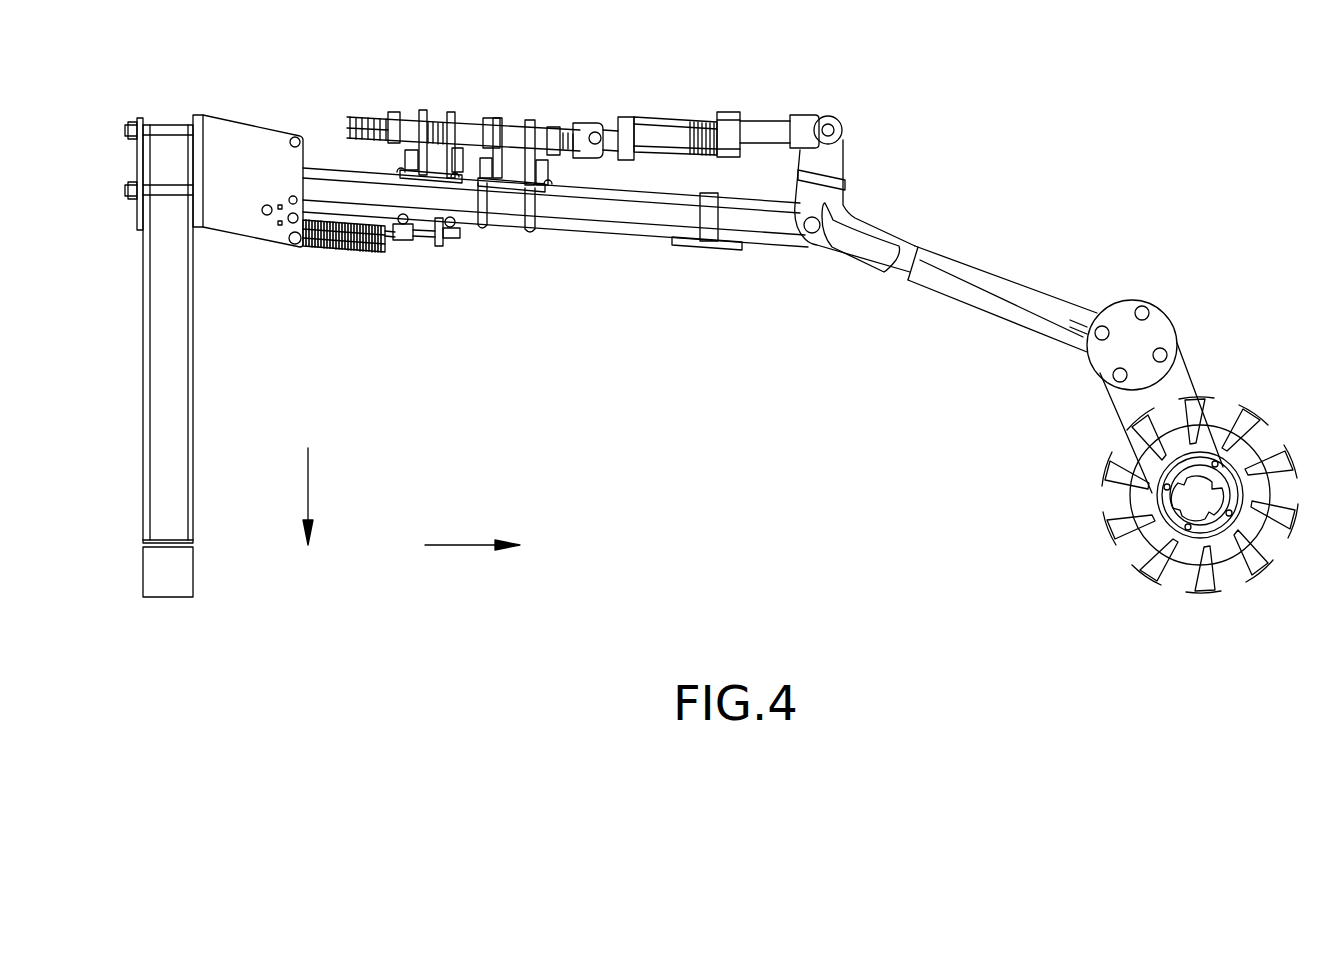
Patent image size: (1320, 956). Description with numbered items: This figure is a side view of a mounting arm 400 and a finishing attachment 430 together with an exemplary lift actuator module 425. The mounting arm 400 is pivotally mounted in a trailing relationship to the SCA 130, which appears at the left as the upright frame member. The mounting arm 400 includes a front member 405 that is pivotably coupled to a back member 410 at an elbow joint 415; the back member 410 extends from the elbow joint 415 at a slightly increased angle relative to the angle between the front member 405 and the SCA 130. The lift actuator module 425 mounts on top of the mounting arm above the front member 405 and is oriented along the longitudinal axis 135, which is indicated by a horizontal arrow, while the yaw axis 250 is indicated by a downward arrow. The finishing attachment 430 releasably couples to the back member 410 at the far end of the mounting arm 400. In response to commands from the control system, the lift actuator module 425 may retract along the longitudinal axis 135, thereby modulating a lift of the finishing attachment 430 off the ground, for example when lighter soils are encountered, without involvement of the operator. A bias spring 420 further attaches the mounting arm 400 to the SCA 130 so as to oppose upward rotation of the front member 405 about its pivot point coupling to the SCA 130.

The SCA 130 is at (193, 358).
The longitudinal axis 135 is at (460, 545).
The yaw axis 250 is at (308, 483).
The mounting arm 400 is at (695, 376).
The front member 405 is at (572, 233).
The back member 410 is at (958, 259).
The elbow joint 415 is at (820, 250).
The bias spring 420 is at (354, 250).
The lift actuator module 425 is at (670, 118).
The finishing attachment 430 is at (1185, 366).